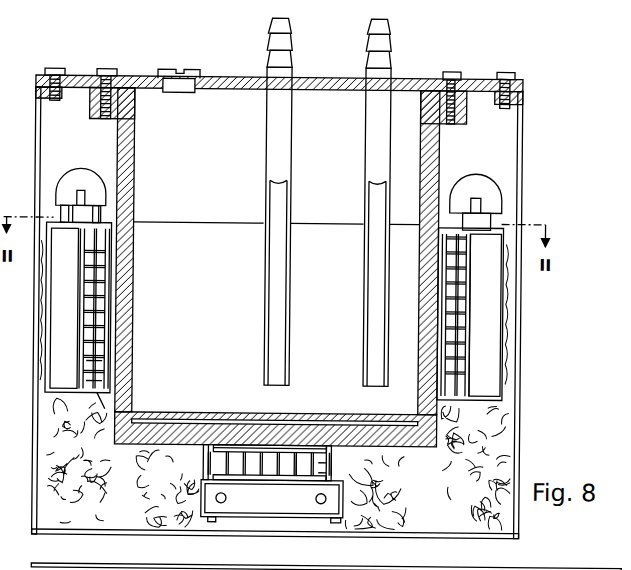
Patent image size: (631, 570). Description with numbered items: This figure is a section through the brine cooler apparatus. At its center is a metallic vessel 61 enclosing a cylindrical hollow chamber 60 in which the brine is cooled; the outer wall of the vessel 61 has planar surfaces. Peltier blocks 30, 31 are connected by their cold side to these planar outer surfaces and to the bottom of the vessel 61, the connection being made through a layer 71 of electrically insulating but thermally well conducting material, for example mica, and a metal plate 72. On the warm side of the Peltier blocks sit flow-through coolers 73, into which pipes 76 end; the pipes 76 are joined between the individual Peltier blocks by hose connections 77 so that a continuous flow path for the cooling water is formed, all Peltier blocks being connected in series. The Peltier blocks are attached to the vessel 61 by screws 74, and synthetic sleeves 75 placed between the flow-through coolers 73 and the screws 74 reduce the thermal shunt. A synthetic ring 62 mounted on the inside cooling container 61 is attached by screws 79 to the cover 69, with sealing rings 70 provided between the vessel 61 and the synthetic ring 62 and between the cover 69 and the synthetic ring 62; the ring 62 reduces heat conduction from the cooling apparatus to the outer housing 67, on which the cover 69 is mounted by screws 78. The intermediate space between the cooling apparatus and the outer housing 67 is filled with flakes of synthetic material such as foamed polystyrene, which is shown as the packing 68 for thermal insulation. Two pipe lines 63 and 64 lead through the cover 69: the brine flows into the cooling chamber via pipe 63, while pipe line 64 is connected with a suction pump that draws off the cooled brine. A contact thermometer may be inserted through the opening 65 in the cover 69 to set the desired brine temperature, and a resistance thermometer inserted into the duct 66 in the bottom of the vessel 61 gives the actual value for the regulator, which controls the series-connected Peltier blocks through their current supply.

The Peltier block 30 is at (362, 482).
The Peltier block 31 is at (87, 380).
The cylindrical hollow chamber 60 is at (197, 238).
The metallic vessel 61 is at (420, 443).
The synthetic ring 62 is at (440, 141).
The pipe line 63 is at (270, 54).
The pipe line 64 is at (370, 55).
The opening 65 is at (190, 67).
The duct 66 is at (117, 425).
The outer housing 67 is at (523, 141).
The insulating packing 68 is at (492, 421).
The cover 69 is at (483, 77).
The sealing ring 70 is at (433, 92).
The layer 71 is at (88, 336).
The metal plate 72 is at (109, 320).
The flow-through cooler 73 is at (48, 292).
The screw 74 is at (215, 520).
The synthetic sleeve 75 is at (207, 468).
The pipe 76 is at (72, 214).
The hose connection 77 is at (83, 172).
The screw 78 is at (55, 67).
The screw 79 is at (108, 67).